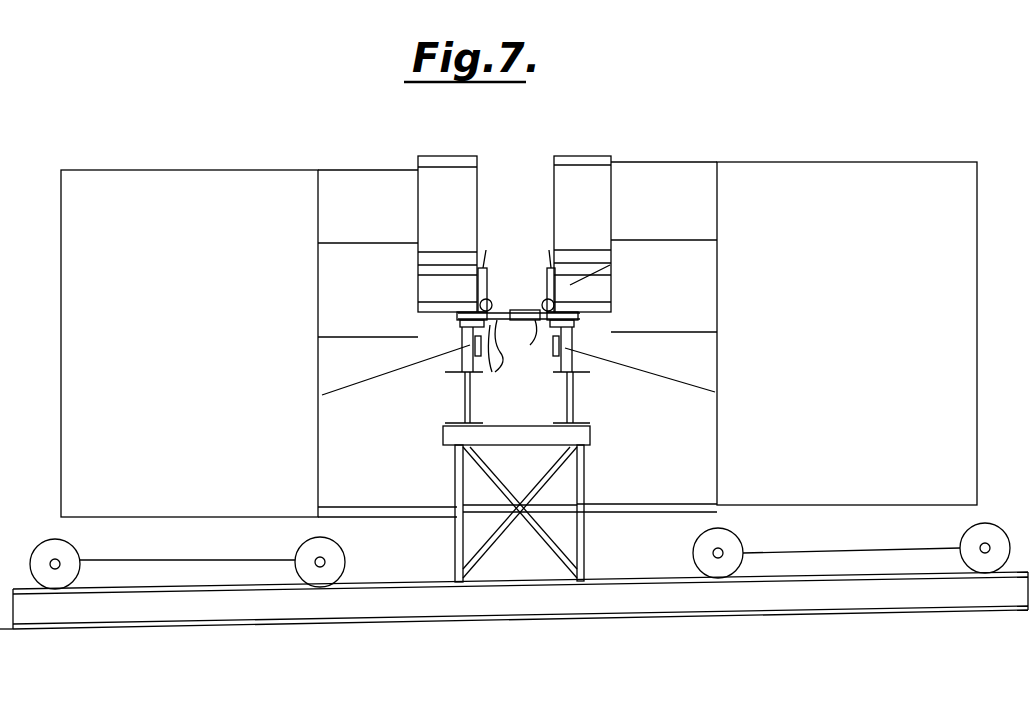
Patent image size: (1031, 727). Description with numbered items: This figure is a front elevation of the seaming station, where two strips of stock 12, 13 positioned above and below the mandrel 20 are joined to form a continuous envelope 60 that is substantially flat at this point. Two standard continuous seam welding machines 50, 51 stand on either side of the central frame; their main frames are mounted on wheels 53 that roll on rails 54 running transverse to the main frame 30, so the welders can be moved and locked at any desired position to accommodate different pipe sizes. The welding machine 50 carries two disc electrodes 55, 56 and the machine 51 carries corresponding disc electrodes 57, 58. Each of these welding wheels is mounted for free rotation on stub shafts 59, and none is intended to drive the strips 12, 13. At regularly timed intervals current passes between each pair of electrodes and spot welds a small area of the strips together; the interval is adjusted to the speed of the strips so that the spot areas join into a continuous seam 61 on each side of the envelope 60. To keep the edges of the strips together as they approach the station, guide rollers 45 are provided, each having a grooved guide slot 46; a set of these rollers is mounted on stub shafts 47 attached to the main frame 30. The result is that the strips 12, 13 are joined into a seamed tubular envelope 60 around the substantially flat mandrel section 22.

The strip of stock 12 is at (533, 311).
The strip of stock 13 is at (509, 346).
The mandrel 20 is at (532, 335).
The substantially flat mandrel section 22 is at (520, 313).
The main frame 30 is at (588, 418).
The guide rollers 45 is at (456, 315).
The grooved guide slot 46 is at (458, 323).
The stub shafts 47 is at (462, 342).
The seam welding machine 50 is at (196, 329).
The seam welding machine 51 is at (866, 324).
The wheels 53 is at (70, 554).
The rails 54 is at (381, 598).
The disc electrode 55 is at (487, 266).
The disc electrode 56 is at (488, 332).
The disc electrode 57 is at (549, 266).
The disc electrode 58 is at (546, 332).
The stub shafts 59 is at (462, 350).
The envelope 60 is at (506, 353).
The continuous seam 61 is at (480, 302).